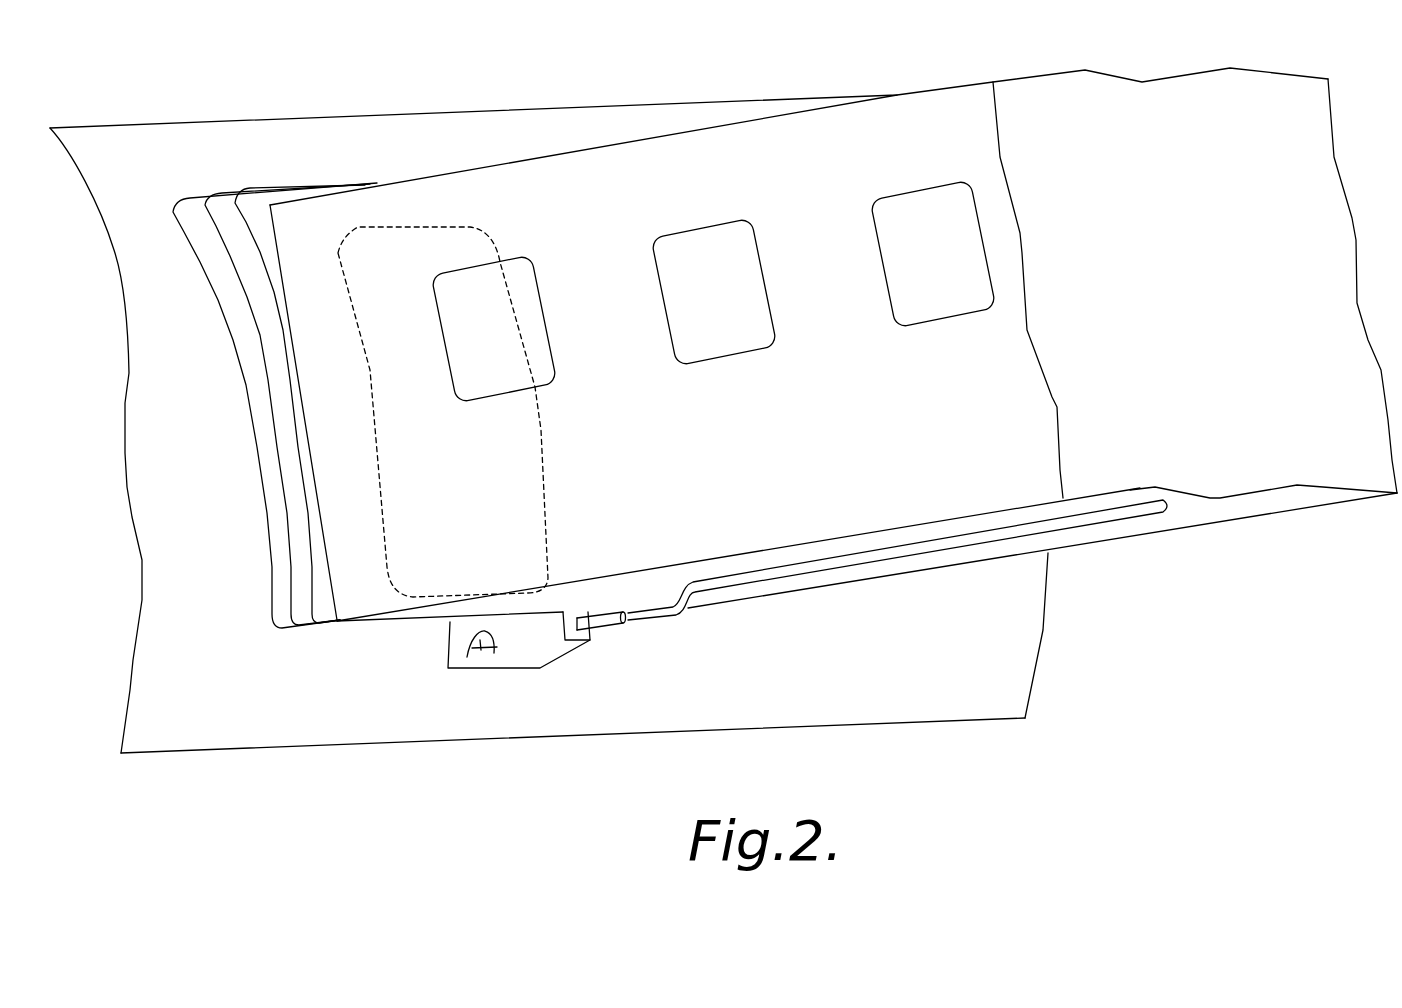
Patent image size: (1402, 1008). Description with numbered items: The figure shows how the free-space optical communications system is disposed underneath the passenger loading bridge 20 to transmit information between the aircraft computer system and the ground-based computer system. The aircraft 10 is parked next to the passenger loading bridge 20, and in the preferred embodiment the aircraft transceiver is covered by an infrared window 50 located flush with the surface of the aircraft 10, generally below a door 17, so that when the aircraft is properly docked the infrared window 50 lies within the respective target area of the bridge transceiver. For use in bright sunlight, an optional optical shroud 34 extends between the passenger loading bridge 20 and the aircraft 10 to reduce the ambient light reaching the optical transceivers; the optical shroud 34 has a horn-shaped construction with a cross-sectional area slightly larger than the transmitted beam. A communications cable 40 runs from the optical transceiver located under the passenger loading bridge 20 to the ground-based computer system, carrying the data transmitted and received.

The aircraft 10 is at (198, 715).
The door 17 is at (528, 493).
The passenger loading bridge 20 is at (1218, 518).
The optical shroud 34 is at (558, 648).
The communications cable 40 is at (693, 592).
The infrared window 50 is at (457, 673).